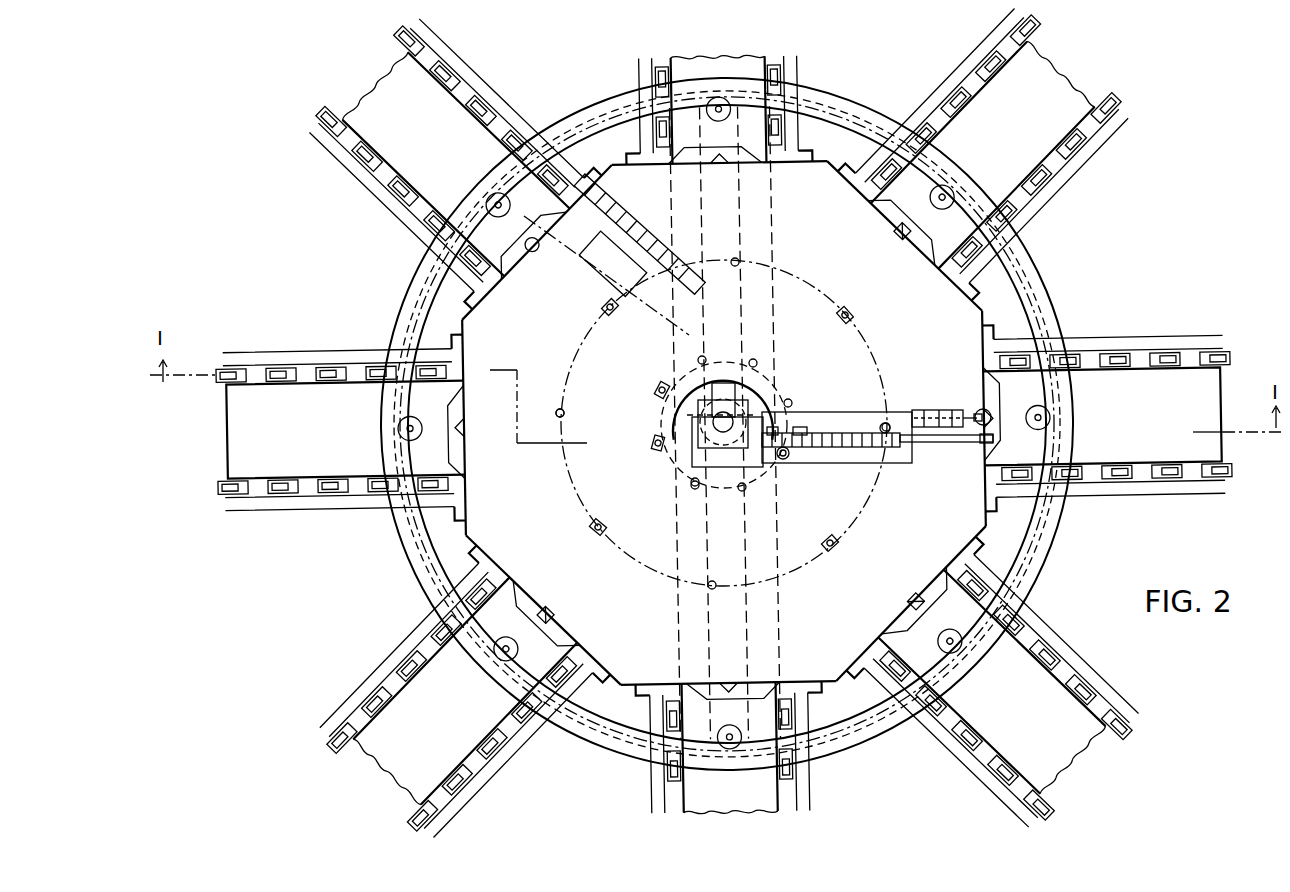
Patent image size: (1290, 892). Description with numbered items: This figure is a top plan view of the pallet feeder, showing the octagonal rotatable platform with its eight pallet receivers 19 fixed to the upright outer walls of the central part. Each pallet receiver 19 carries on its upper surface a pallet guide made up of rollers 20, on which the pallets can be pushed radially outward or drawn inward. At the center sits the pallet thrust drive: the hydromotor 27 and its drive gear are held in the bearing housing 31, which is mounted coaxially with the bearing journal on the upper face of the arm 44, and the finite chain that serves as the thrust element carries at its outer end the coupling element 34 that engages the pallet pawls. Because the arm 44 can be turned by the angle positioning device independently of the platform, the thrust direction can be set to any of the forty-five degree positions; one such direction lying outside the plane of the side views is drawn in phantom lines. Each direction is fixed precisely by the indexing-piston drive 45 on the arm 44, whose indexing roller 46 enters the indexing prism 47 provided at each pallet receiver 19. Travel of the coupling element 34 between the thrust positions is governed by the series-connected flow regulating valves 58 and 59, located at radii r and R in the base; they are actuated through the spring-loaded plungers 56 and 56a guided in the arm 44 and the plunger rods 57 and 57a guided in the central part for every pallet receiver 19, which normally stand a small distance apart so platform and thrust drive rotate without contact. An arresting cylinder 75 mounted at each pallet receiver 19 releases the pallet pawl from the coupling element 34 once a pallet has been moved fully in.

The pallet receiver 19 is at (1038, 734).
The rollers 20 is at (373, 694).
The hydromotor 27 is at (724, 388).
The bearing housing 31 is at (724, 462).
The coupling element 34 is at (980, 443).
The arm 44 is at (838, 462).
The indexing-piston drive 45 is at (927, 410).
The indexing roller 46 is at (977, 410).
The indexing prism 47 is at (908, 600).
The plunger 56 is at (786, 458).
The plunger 56a is at (884, 425).
The plunger rod 57 is at (695, 488).
The plunger rod 57a is at (565, 412).
The flow regulating valve 58 is at (592, 529).
The flow regulating valve 59 is at (653, 447).
The arresting cylinder 75 is at (936, 642).